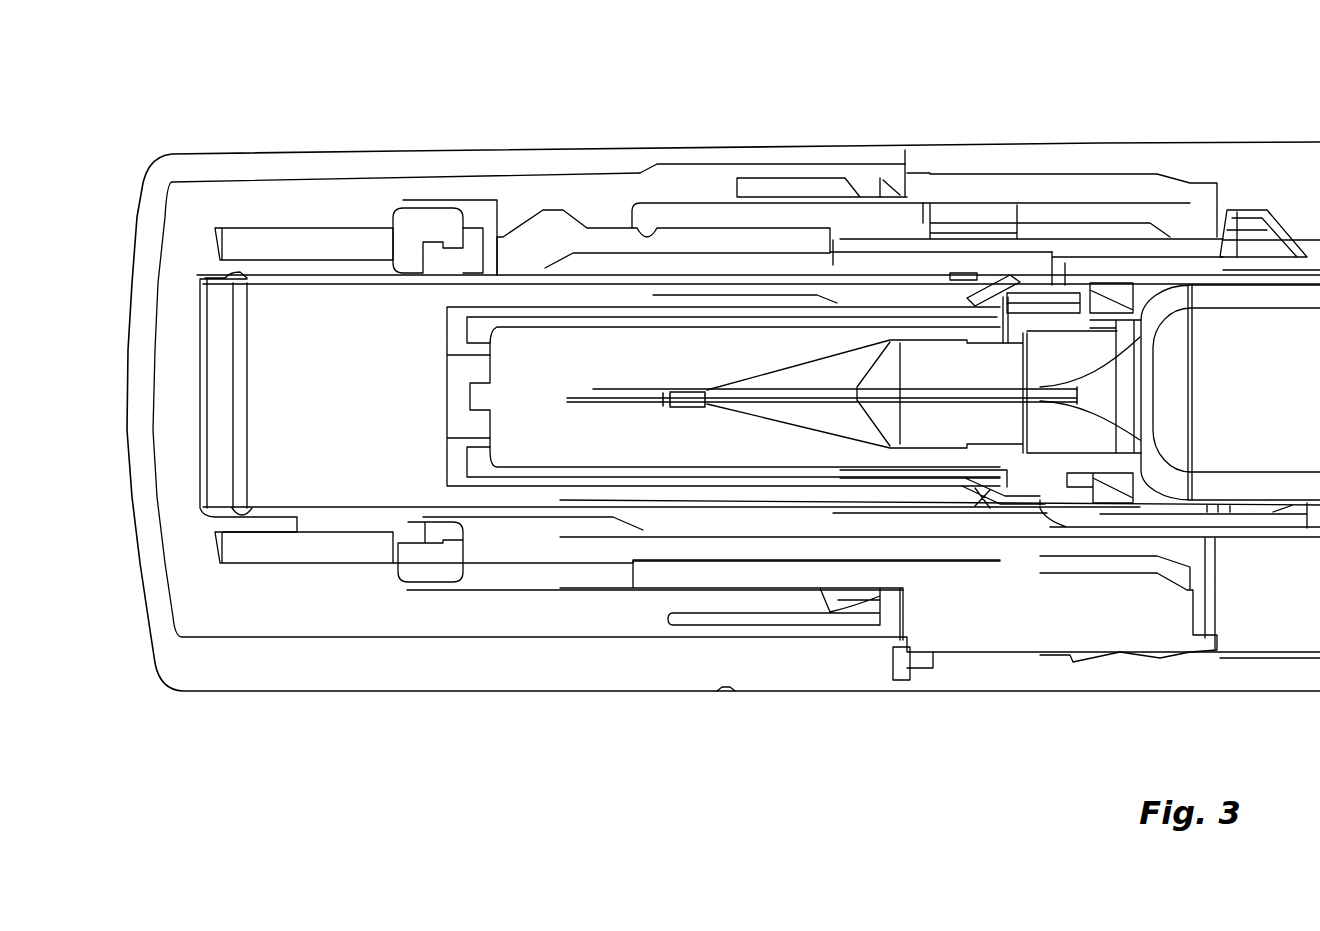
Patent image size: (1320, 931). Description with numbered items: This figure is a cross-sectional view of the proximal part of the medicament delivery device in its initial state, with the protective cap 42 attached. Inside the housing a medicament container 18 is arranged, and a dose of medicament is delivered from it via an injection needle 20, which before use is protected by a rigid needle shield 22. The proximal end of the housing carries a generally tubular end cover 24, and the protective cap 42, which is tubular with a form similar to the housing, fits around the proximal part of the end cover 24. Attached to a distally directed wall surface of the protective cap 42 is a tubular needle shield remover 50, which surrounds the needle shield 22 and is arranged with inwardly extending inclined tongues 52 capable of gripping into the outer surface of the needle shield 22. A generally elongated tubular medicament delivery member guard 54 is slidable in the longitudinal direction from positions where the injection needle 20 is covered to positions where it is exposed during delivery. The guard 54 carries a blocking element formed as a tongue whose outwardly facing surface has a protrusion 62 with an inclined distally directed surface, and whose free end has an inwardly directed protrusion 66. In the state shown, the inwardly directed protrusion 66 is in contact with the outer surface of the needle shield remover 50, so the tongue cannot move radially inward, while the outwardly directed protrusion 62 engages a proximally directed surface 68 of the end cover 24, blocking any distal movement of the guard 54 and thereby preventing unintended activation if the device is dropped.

The medicament container 18 is at (1258, 396).
The injection needle 20 is at (687, 393).
The medicament delivery member shield 22 is at (660, 313).
The end cover 24 is at (952, 190).
The protective cap 42 is at (175, 676).
The needle shield remover 50 is at (277, 313).
The inclined tongues 52 is at (987, 490).
The medicament delivery member guard 54 is at (797, 543).
The protrusion 62 is at (548, 217).
The inwardly directed protrusion 66 is at (513, 262).
The proximally directed surface 68 is at (630, 217).